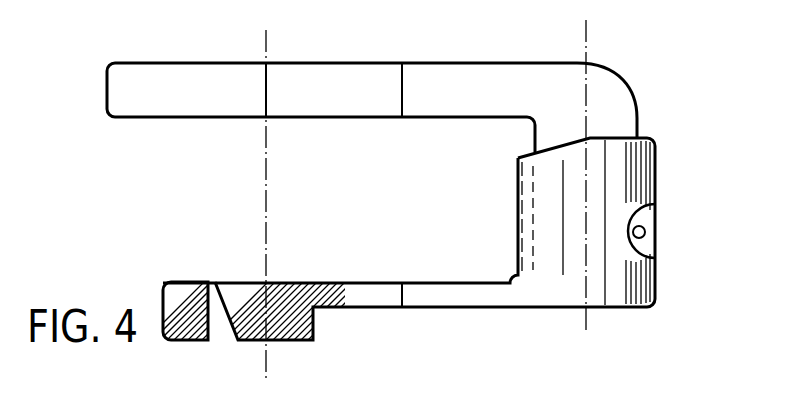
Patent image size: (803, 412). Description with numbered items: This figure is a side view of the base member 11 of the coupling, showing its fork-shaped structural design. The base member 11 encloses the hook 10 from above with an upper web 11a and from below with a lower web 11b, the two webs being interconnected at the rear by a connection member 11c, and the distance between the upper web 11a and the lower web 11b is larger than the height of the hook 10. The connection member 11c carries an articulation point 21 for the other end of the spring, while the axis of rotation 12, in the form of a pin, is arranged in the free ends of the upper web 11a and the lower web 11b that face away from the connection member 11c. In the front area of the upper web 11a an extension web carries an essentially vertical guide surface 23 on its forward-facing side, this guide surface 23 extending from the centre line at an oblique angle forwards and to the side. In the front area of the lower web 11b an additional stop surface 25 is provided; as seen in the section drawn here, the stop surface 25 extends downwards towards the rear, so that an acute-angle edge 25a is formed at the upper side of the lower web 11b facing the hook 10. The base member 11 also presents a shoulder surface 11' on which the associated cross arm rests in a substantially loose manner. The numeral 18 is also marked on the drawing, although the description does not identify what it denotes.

The hook 10 is at (452, 6).
The base member 11 is at (417, 203).
The upper web 11a is at (343, 97).
The lower web 11b is at (441, 297).
The rear connection member 11c is at (590, 165).
The shoulder surface 11' is at (661, 198).
The axis of rotation 12 is at (266, 362).
The support member 18 is at (307, 6).
The articulation point 21 is at (653, 237).
The guide surface 23 is at (200, 93).
The additional stop surface 25 is at (227, 322).
The acute-angle edge 25a is at (212, 283).